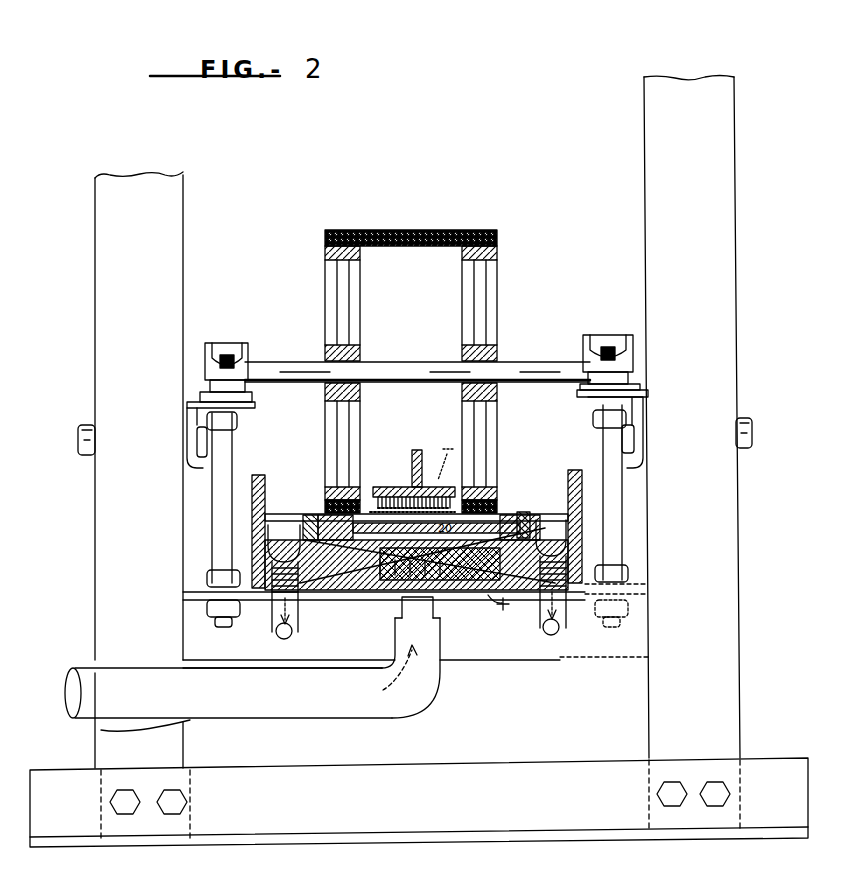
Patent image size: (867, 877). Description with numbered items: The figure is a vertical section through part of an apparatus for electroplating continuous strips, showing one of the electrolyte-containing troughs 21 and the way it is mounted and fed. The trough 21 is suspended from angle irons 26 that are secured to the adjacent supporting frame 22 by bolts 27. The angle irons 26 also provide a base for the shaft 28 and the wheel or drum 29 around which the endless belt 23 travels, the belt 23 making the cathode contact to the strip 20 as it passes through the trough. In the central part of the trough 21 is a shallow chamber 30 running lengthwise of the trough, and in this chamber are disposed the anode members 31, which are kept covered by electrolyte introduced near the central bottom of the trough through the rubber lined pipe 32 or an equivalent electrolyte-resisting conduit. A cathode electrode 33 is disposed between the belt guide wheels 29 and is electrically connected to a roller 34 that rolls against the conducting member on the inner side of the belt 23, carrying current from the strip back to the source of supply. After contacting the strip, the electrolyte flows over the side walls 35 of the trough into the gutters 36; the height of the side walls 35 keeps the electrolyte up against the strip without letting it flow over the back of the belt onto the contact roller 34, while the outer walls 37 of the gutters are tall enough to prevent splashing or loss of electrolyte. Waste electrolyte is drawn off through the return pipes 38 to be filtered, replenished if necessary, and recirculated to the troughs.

The strip 20 is at (428, 359).
The trough 21 is at (365, 585).
The supporting frame 22 is at (90, 540).
The endless belt 23 is at (335, 232).
The angle irons 26 is at (255, 408).
The bolts 27 is at (80, 452).
The shaft 28 is at (537, 362).
The wheel or drum 29 is at (497, 305).
The shallow chamber 30 is at (470, 530).
The anode members 31 is at (395, 570).
The rubber lined pipe 32 is at (290, 712).
The cathode electrode 33 is at (414, 452).
The roller 34 is at (396, 487).
The side walls 35 is at (312, 514).
The gutters 36 is at (288, 520).
The outer walls 37 is at (256, 477).
The return pipes 38 is at (270, 625).